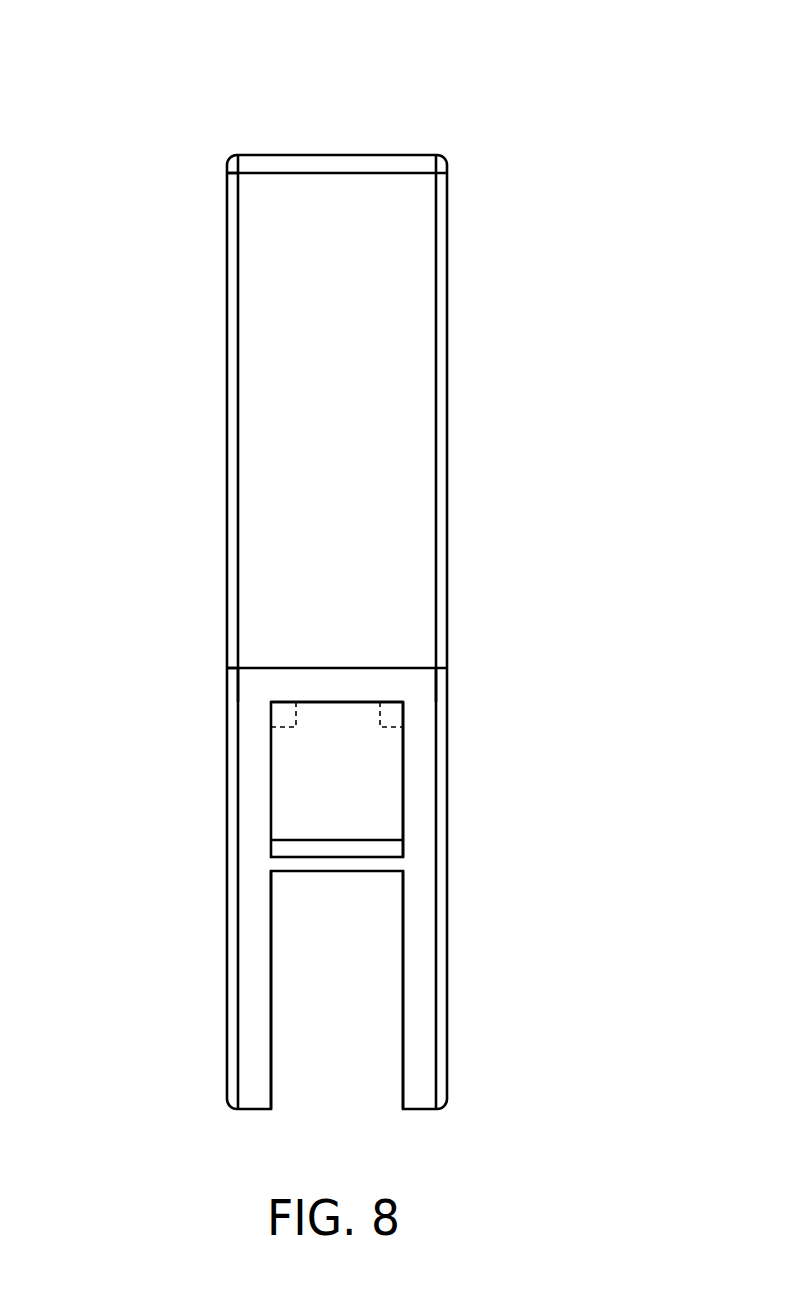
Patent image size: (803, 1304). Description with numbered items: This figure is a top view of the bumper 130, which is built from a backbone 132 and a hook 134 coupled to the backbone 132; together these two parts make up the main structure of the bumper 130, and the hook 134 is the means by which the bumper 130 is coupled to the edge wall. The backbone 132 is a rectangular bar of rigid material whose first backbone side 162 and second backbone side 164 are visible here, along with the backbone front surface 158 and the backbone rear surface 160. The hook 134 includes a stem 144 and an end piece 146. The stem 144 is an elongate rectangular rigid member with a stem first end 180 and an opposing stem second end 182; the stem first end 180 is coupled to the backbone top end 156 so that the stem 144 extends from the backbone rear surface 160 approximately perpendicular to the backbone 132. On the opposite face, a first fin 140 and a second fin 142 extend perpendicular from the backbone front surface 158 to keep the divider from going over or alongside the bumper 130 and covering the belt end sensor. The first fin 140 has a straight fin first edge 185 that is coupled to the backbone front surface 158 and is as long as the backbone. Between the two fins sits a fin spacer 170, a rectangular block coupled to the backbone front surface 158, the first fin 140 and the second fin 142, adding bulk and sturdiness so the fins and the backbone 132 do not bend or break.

The bumper 130 is at (214, 94).
The backbone 132 is at (392, 688).
The hook 134 is at (464, 300).
The first fin 140 is at (248, 960).
The second fin 142 is at (422, 973).
The stem 144 is at (250, 307).
The end piece 146 is at (345, 160).
The backbone top end 156 is at (308, 677).
The backbone front surface 158 is at (310, 703).
The backbone rear surface 160 is at (368, 667).
The first backbone side 162 is at (253, 692).
The second backbone side 164 is at (422, 681).
The fin spacer 170 is at (338, 828).
The stem first end 180 is at (178, 613).
The stem second end 182 is at (183, 177).
The fin first edge 185 is at (420, 720).